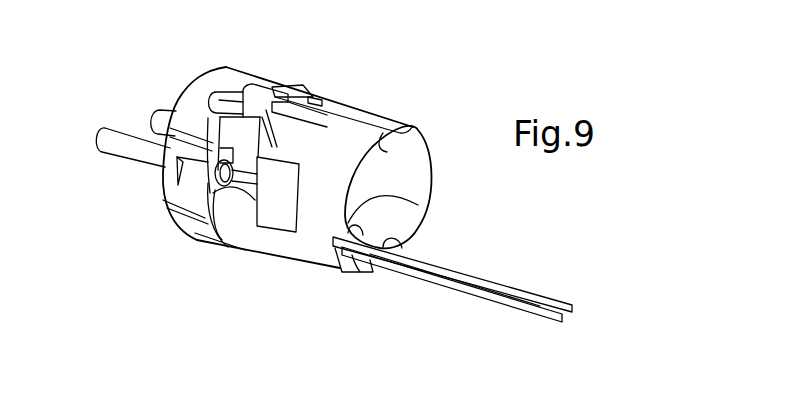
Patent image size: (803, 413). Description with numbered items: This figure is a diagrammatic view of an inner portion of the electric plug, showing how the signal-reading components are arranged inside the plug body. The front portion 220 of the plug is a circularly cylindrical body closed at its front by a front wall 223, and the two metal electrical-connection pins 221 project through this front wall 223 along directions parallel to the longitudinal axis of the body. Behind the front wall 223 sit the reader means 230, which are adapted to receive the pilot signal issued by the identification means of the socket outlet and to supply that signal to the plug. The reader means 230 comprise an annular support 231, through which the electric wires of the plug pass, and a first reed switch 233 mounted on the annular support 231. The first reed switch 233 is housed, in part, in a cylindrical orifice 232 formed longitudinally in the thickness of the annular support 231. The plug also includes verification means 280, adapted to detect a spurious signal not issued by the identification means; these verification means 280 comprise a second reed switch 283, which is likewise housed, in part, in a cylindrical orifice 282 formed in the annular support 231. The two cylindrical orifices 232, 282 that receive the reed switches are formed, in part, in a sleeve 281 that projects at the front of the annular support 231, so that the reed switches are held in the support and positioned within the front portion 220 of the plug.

The front portion 220 is at (235, 78).
The metal electrical-connection pins 221 is at (162, 118).
The front wall 223 is at (218, 80).
The reader means 230 is at (240, 290).
The annular support 231 is at (362, 132).
The cylindrical orifice 232 is at (341, 273).
The first reed switch 233 is at (210, 228).
The verification means 280 is at (136, 204).
The sleeve 281 is at (248, 233).
The cylindrical orifice 282 is at (422, 202).
The second reed switch 283 is at (218, 222).